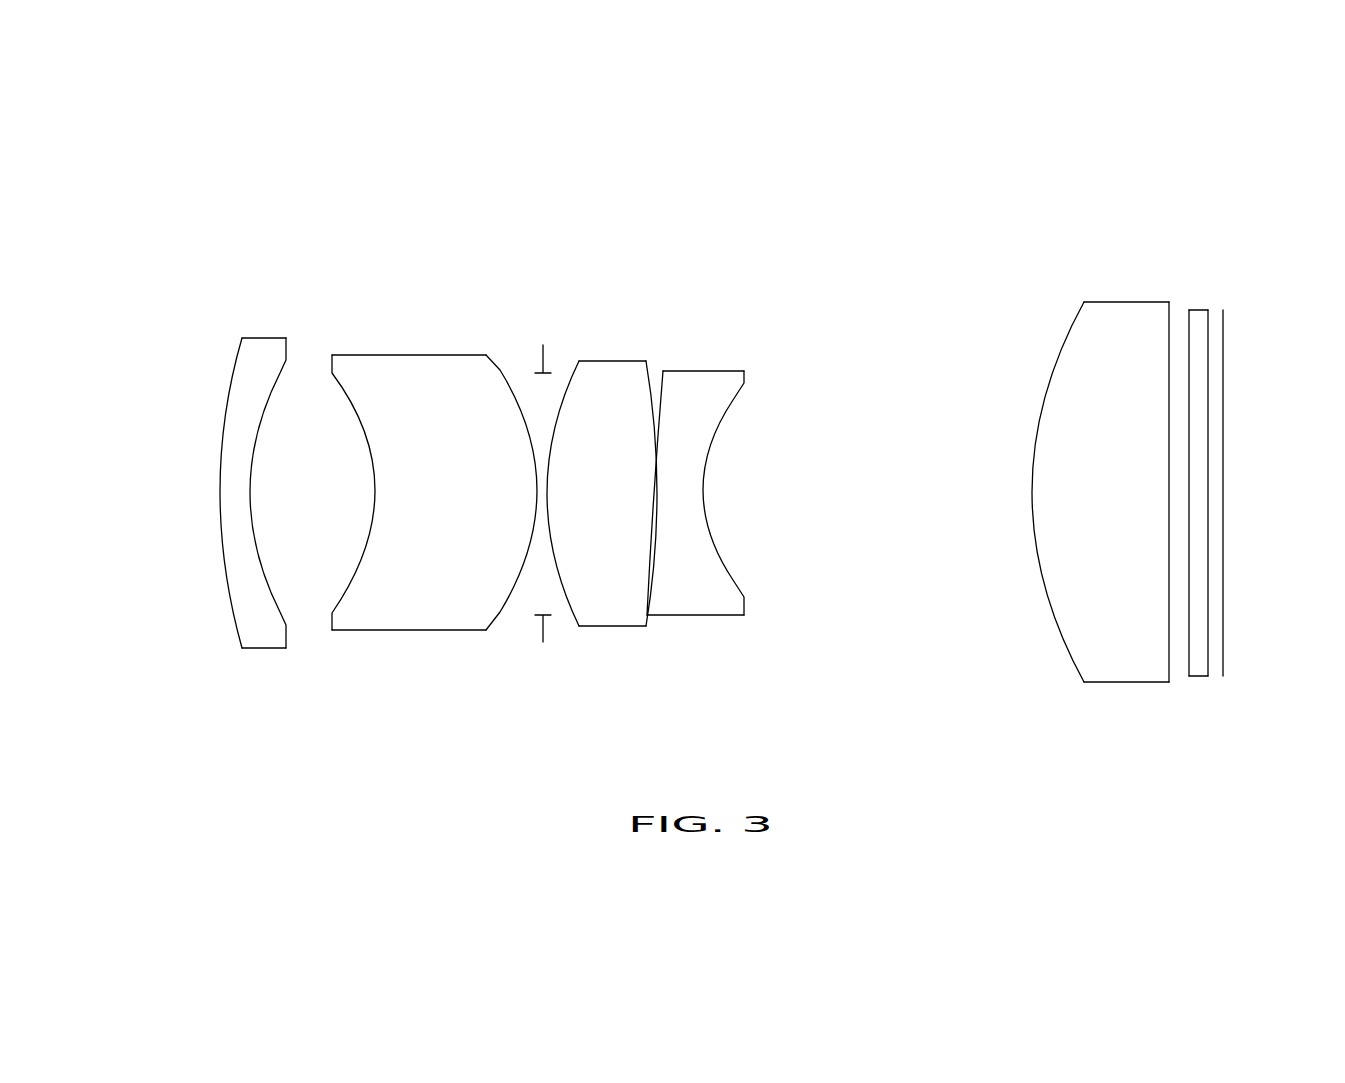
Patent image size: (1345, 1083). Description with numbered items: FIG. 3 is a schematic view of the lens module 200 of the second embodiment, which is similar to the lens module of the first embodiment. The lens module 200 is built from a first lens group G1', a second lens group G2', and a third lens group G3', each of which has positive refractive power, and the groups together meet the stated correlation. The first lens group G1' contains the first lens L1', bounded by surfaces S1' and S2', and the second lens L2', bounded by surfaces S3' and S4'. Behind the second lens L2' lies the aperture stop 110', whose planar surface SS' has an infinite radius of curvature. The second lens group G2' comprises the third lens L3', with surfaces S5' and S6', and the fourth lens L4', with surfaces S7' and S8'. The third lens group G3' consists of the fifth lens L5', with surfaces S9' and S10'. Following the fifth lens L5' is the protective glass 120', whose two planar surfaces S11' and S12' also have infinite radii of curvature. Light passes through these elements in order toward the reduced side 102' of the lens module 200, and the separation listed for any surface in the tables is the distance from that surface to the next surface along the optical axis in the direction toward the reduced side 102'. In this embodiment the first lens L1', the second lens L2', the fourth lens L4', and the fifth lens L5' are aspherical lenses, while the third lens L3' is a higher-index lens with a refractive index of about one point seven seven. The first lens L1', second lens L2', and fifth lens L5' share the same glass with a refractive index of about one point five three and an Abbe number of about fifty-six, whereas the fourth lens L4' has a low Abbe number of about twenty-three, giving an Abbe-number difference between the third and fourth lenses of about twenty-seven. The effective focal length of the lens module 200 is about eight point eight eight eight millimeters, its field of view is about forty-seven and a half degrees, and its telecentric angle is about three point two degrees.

The reduced side 102' is at (721, 416).
The first lens group G1' is at (321, 457).
The second lens group G2' is at (627, 458).
The third lens group G3' is at (1149, 467).
The first lens L1' is at (242, 531).
The second lens L2' is at (321, 527).
The third lens L3' is at (571, 530).
The fourth lens L4' is at (714, 549).
The fifth lens L5' is at (1149, 524).
The first surface of first lens S1' is at (197, 519).
The second surface of first lens S2' is at (291, 531).
The first surface of second lens S3' is at (240, 527).
The second surface of second lens S4' is at (511, 524).
The first surface of third lens S5' is at (518, 530).
The second surface of third lens S6' is at (665, 521).
The first surface of fourth lens S7' is at (649, 549).
The second surface of fourth lens S8' is at (749, 526).
The first surface of fifth lens S9' is at (1033, 494).
The second surface of fifth lens S10' is at (1242, 492).
The first surface of protective glass S11' is at (1114, 536).
The second surface of protective glass S12' is at (1273, 493).
The aperture stop surface SS' is at (555, 519).
The aperture stop 110' is at (540, 434).
The protective glass 120' is at (1189, 536).
The lens module 200 is at (1292, 778).